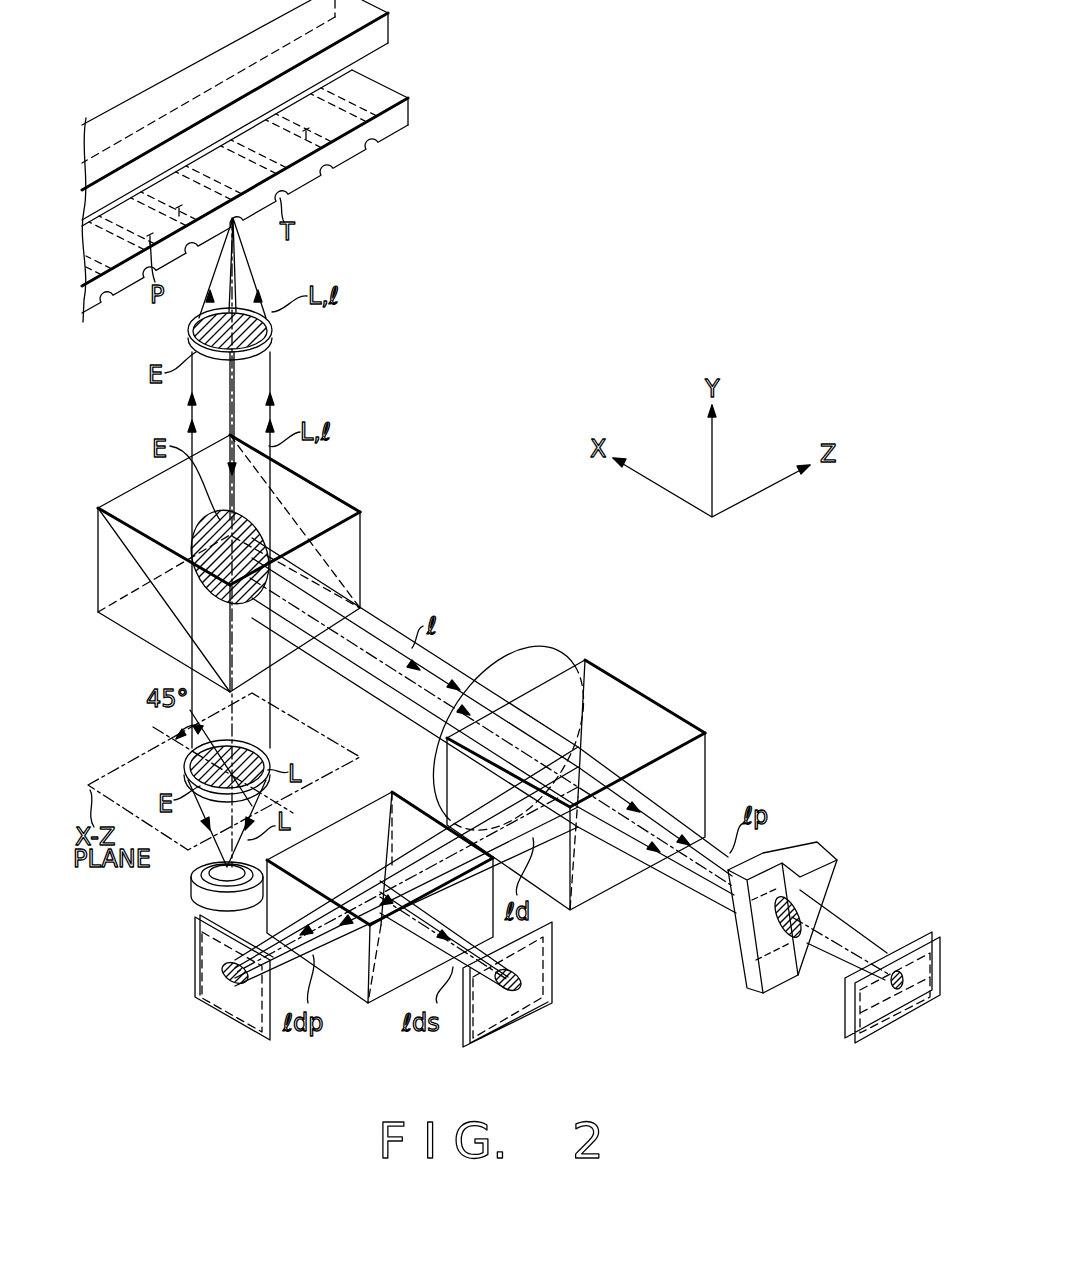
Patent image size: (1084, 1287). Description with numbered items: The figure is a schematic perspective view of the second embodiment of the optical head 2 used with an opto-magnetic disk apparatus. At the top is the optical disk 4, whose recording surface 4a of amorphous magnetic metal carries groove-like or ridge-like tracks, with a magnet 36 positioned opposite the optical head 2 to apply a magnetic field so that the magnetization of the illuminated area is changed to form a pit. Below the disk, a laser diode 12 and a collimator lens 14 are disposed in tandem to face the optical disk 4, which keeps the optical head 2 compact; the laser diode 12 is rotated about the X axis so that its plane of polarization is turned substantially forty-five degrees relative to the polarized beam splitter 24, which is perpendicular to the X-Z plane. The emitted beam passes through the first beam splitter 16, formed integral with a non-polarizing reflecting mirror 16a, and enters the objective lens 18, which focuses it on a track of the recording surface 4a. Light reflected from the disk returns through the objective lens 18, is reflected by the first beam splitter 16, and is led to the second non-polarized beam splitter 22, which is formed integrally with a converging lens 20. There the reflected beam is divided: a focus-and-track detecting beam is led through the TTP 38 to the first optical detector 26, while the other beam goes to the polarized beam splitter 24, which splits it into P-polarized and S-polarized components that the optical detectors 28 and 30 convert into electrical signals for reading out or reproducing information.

The optical head 2 is at (497, 607).
The optical disk 4 is at (411, 114).
The recording surface 4a is at (397, 132).
The laser diode 12 is at (190, 885).
The collimator lens 14 is at (186, 766).
The first beam splitter 16 is at (128, 630).
The non-polarizing reflecting mirror 16a is at (135, 545).
The objective lens 18 is at (276, 331).
The converging lens 20 is at (545, 632).
The second non-polarized beam splitter 22 is at (627, 683).
The polarized beam splitter 24 is at (350, 1002).
The first optical detector 26 is at (882, 1033).
The optical detector 28 is at (555, 970).
The optical detector 30 is at (252, 1032).
The magnet 36 is at (389, 41).
The TTP 38 is at (831, 848).